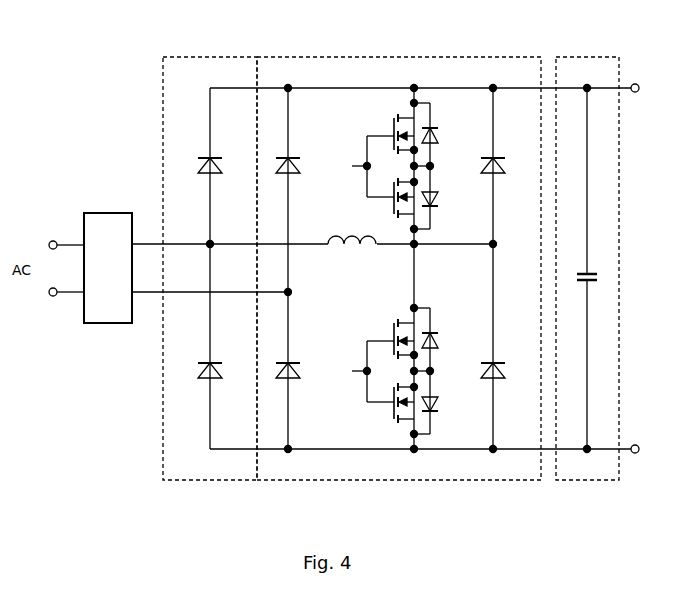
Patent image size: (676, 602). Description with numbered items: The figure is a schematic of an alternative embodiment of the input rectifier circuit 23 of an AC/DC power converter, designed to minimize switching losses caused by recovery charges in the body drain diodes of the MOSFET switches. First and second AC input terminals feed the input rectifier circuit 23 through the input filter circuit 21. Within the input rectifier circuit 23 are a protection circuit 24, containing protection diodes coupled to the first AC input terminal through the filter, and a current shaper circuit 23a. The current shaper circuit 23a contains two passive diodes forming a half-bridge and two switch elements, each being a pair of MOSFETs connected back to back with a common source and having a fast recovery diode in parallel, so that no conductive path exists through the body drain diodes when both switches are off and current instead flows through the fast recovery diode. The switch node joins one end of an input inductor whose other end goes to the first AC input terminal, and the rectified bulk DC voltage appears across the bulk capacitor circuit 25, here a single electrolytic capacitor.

The input filter circuit 21 is at (110, 212).
The input rectifier circuit 23 is at (420, 300).
The current shaper circuit 23a is at (371, 431).
The protection circuit 24 is at (183, 415).
The bulk capacitor circuit 25 is at (604, 53).